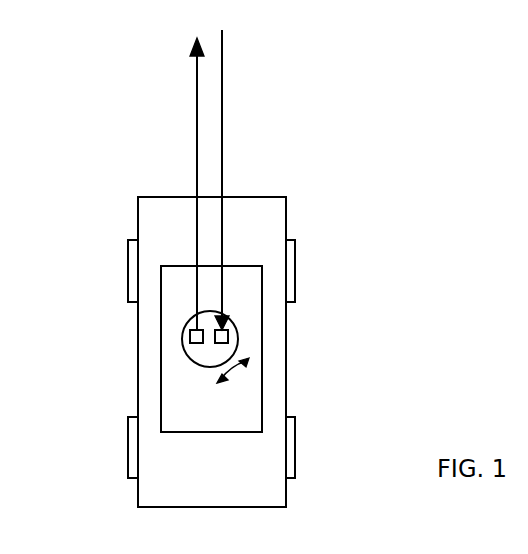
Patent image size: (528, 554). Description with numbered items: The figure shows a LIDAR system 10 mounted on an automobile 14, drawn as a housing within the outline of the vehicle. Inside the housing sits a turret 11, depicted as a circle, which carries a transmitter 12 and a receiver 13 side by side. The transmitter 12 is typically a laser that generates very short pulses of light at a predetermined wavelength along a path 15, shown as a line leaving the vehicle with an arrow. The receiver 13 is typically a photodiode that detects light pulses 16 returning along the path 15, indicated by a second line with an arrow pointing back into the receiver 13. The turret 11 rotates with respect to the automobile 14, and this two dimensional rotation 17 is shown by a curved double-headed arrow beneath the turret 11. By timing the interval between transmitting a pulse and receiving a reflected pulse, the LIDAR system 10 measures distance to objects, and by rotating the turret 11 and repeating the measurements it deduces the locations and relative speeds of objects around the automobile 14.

The LIDAR system 10 is at (172, 282).
The turret 11 is at (210, 367).
The transmitter 12 is at (190, 337).
The receiver 13 is at (228, 338).
The automobile 14 is at (286, 354).
The path 15 is at (195, 138).
The light pulses 16 is at (225, 146).
The rotation 17 is at (233, 378).